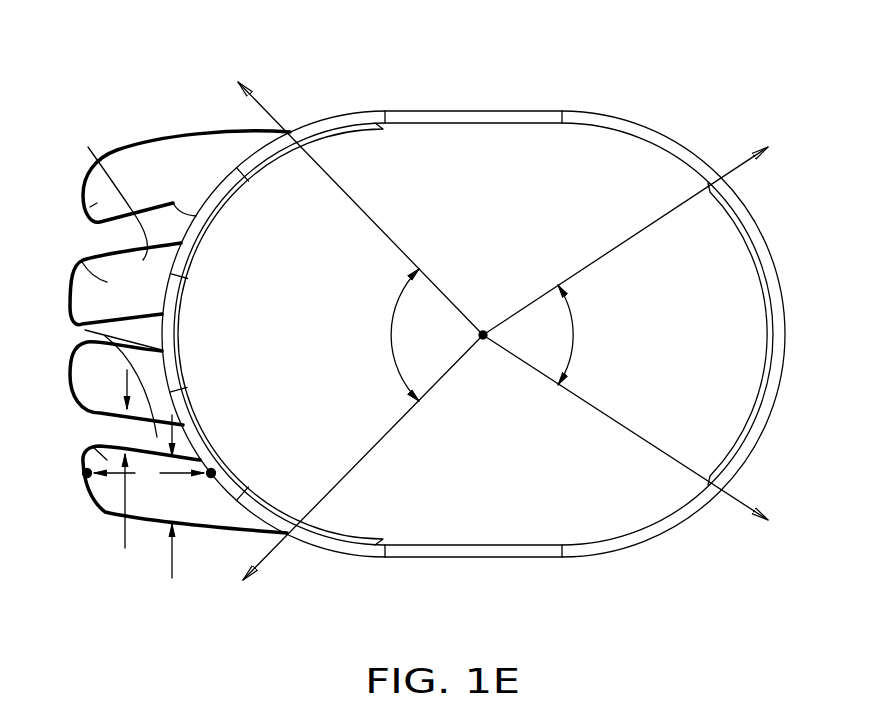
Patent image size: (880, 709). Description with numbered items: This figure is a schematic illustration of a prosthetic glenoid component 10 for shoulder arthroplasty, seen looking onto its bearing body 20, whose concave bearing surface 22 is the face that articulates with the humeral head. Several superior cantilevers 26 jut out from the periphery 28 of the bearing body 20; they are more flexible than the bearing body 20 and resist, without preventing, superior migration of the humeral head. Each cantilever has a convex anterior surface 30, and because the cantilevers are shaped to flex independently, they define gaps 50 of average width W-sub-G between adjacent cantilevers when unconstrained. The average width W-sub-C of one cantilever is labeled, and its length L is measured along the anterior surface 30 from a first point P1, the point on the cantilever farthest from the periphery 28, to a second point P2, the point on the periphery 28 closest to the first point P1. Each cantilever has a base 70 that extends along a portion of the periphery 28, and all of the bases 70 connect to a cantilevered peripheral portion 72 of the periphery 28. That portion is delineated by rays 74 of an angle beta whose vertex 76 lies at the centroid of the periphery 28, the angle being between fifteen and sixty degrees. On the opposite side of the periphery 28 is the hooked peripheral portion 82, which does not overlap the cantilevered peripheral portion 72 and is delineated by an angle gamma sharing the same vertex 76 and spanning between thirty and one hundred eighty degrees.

The prosthetic glenoid component 10 is at (155, 62).
The bearing body 20 is at (728, 538).
The concave bearing surface 22 is at (450, 507).
The superior cantilevers 26 is at (148, 177).
The periphery 28 is at (175, 197).
The anterior surfaces 30 is at (93, 203).
The gaps 50 is at (162, 228).
The base 70 is at (248, 178).
The cantilevered peripheral portion 72 is at (183, 335).
The rays 74 is at (368, 210).
The vertex 76 is at (618, 245).
The hooked peripheral portion 82 is at (767, 335).
The first point P1 is at (85, 476).
The second point P2 is at (213, 470).